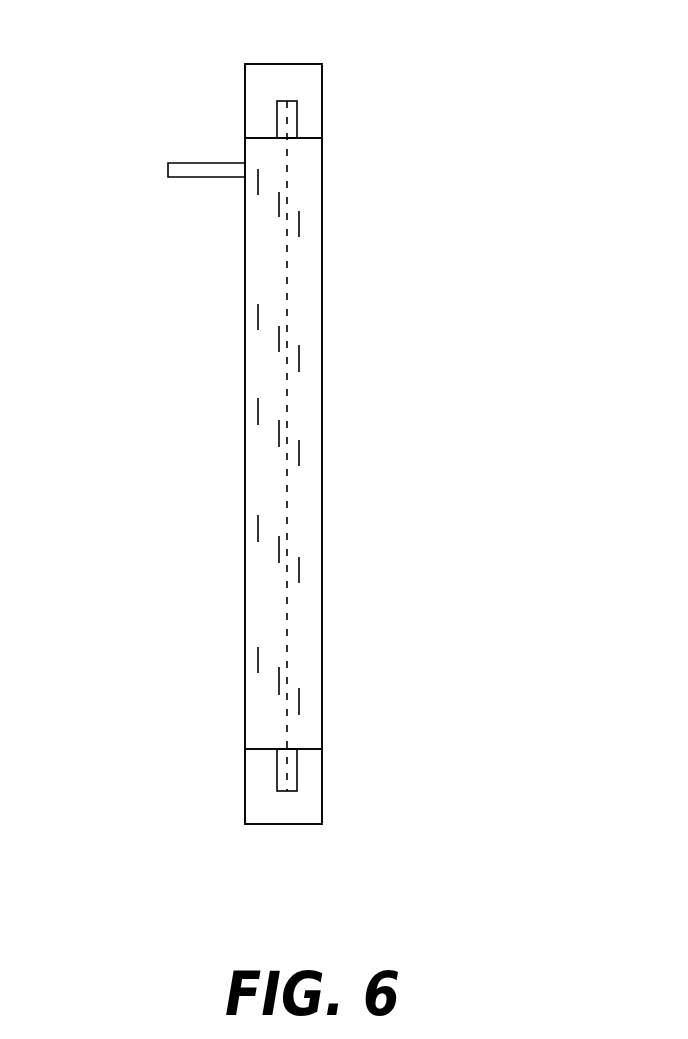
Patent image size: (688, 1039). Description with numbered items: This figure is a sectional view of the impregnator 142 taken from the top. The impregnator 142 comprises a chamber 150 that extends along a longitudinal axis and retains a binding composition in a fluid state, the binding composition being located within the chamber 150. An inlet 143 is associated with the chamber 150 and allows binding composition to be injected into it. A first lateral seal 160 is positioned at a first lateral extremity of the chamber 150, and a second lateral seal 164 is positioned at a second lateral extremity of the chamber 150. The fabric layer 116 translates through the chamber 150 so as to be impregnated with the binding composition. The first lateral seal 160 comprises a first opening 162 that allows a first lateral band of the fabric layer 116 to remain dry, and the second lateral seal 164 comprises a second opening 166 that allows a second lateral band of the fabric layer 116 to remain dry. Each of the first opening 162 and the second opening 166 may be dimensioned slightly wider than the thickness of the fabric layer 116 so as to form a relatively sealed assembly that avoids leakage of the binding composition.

The impregnator 142 is at (387, 304).
The first lateral seal 160 is at (255, 92).
The first opening 162 is at (297, 128).
The inlet 143 is at (167, 167).
The chamber 150 is at (258, 283).
The fabric layer 116 is at (287, 522).
The second lateral seal 164 is at (258, 797).
The second opening 166 is at (297, 763).